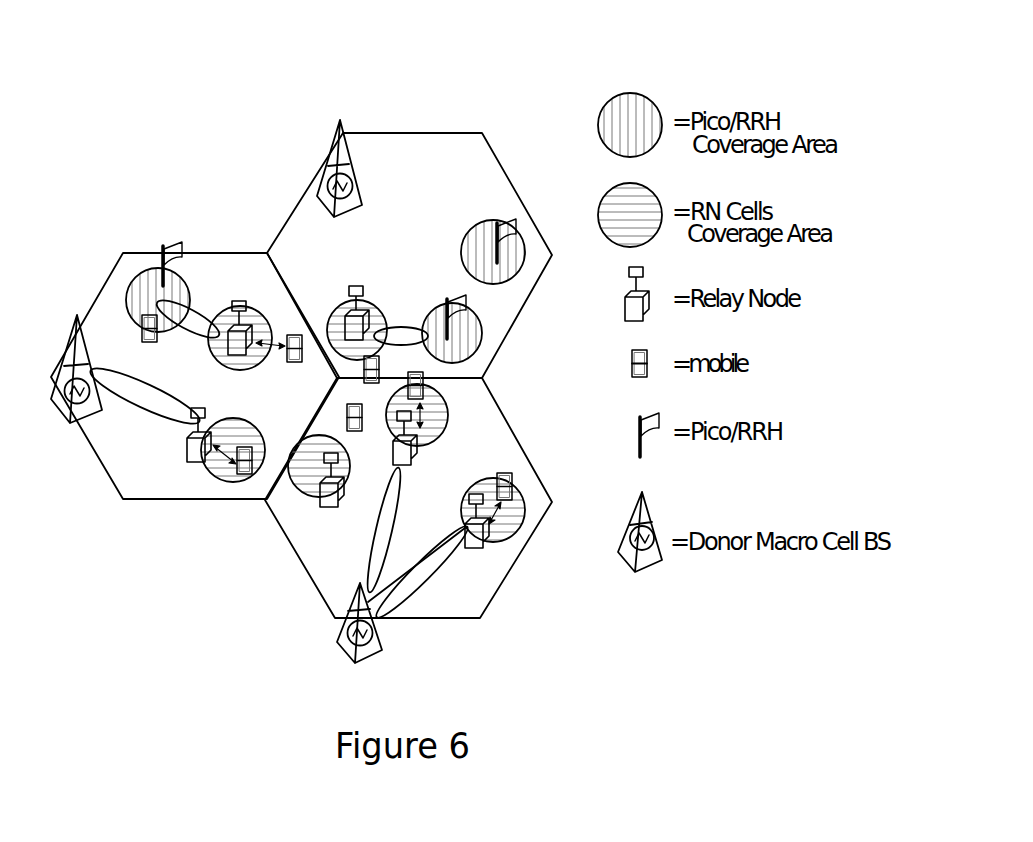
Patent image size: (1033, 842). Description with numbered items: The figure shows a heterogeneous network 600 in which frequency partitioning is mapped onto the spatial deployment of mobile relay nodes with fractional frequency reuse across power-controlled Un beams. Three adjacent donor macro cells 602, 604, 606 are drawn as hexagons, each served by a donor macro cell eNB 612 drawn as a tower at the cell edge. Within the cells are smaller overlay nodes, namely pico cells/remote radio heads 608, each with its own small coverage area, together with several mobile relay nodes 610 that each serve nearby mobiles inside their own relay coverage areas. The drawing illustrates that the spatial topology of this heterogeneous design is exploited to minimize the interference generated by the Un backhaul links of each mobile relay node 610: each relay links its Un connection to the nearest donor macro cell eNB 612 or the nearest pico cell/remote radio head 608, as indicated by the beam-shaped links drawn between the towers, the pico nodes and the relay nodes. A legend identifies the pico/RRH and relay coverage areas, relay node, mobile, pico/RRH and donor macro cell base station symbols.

The heterogeneous network system 600 is at (516, 50).
The donor macro cell 602 is at (127, 253).
The donor macro cell 604 is at (492, 150).
The donor macro cell 606 is at (503, 577).
The pico cell/remote radio head 608 is at (181, 243).
The mobile relay node 610 is at (470, 497).
The donor macro cell eNB 612 is at (340, 120).